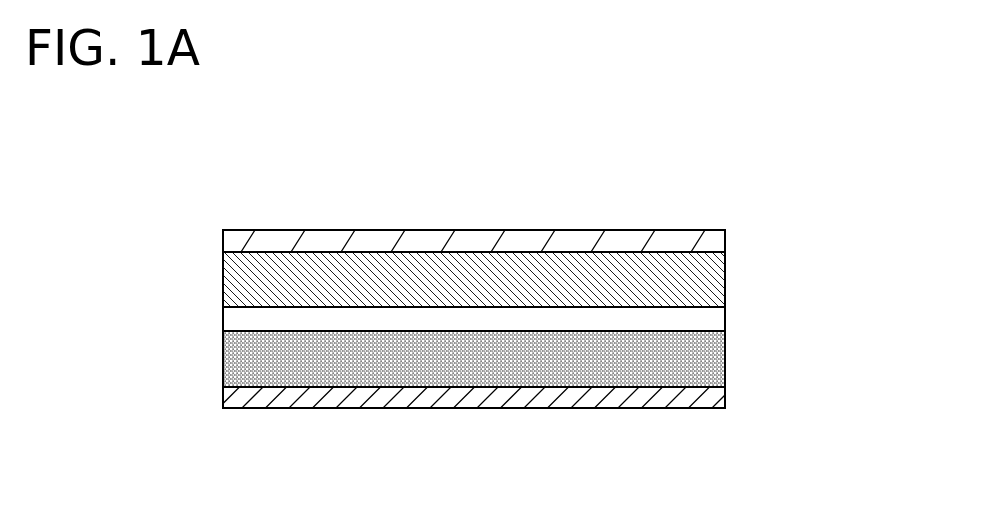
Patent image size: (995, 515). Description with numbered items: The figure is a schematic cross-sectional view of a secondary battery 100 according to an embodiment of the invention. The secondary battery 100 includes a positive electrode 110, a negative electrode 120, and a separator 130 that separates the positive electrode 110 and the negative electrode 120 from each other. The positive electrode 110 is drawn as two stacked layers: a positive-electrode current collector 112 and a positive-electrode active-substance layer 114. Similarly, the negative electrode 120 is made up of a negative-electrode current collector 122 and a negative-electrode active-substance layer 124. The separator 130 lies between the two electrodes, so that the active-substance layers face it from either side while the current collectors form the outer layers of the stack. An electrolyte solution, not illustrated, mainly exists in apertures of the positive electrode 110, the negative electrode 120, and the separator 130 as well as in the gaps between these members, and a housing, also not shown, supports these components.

The secondary battery 100 is at (165, 208).
The positive electrode 110 is at (810, 224).
The positive-electrode current collector 112 is at (712, 239).
The positive-electrode active-substance layer 114 is at (712, 286).
The negative electrode 120 is at (810, 347).
The negative-electrode current collector 122 is at (712, 403).
The negative-electrode active-substance layer 124 is at (712, 363).
The separator 130 is at (590, 323).